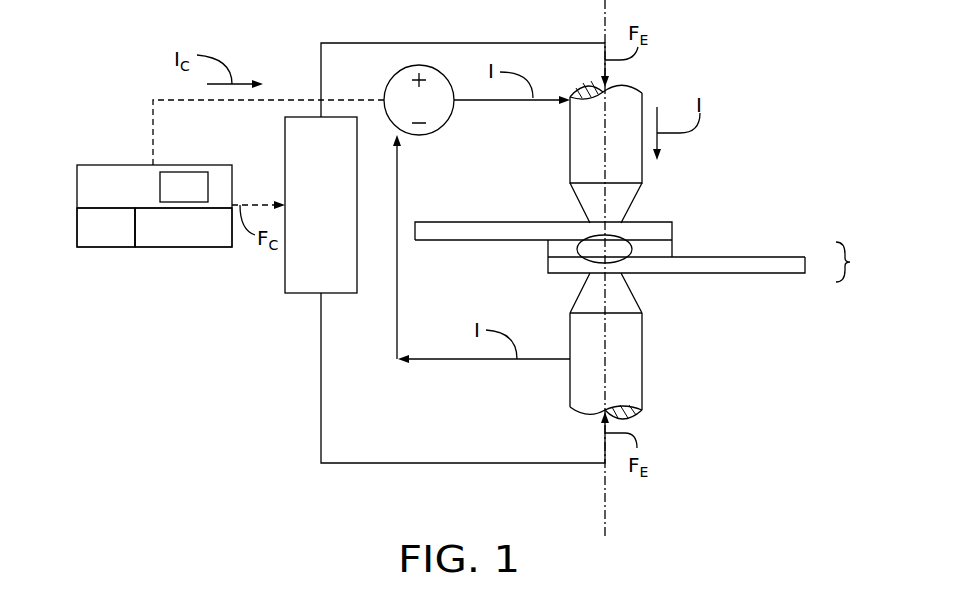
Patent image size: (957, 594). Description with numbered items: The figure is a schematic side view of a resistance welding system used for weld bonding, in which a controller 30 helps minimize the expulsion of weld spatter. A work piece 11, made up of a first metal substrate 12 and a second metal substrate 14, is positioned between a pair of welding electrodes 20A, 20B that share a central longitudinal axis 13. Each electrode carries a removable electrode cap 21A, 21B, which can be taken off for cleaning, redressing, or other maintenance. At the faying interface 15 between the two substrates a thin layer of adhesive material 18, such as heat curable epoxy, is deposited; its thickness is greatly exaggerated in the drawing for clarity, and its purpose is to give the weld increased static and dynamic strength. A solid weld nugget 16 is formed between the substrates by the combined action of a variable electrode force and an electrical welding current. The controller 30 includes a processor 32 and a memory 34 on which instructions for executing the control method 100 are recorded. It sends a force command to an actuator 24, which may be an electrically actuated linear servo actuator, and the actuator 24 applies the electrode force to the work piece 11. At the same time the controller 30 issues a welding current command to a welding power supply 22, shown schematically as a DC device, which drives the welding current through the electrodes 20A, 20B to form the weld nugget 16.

The work piece 11 is at (857, 262).
The first metal substrate 12 is at (525, 222).
The central longitudinal axis 13 is at (605, 495).
The second metal substrate 14 is at (808, 265).
The faying interface 15 is at (724, 248).
The weld nugget 16 is at (577, 248).
The adhesive material 18 is at (672, 246).
The welding electrode 20A is at (642, 96).
The welding electrode 20B is at (642, 376).
The electrode cap 21A is at (634, 204).
The electrode cap 21B is at (633, 292).
The welding power supply 22 is at (419, 65).
The actuator 24 is at (305, 293).
The controller 30 is at (148, 184).
The processor 32 is at (106, 227).
The memory 34 is at (183, 227).
The control method 100 is at (184, 187).